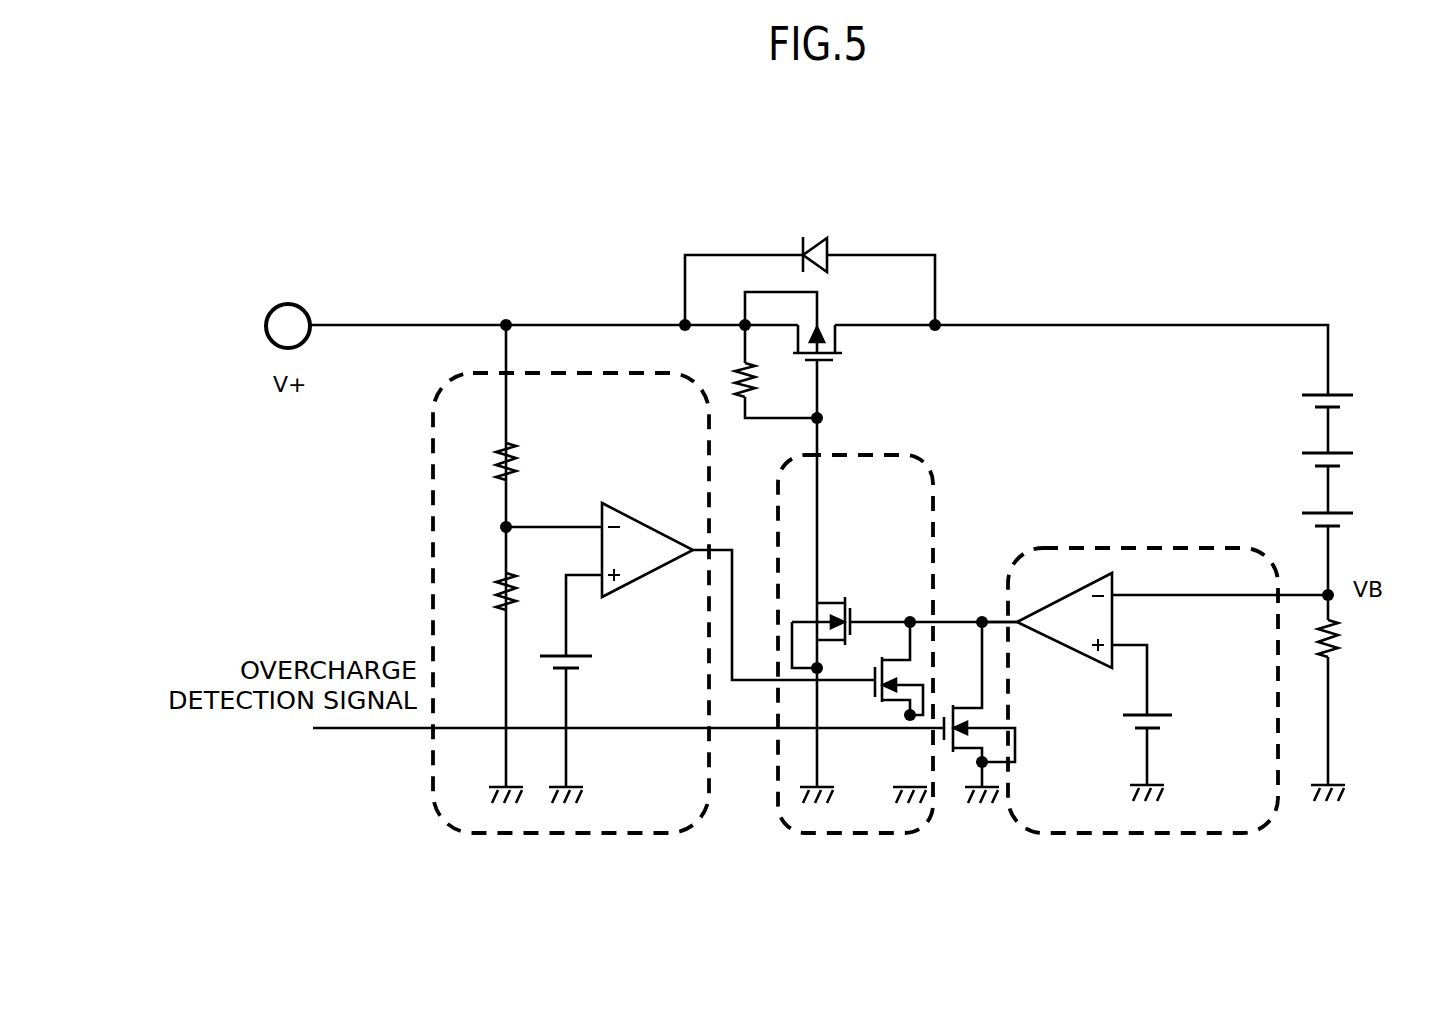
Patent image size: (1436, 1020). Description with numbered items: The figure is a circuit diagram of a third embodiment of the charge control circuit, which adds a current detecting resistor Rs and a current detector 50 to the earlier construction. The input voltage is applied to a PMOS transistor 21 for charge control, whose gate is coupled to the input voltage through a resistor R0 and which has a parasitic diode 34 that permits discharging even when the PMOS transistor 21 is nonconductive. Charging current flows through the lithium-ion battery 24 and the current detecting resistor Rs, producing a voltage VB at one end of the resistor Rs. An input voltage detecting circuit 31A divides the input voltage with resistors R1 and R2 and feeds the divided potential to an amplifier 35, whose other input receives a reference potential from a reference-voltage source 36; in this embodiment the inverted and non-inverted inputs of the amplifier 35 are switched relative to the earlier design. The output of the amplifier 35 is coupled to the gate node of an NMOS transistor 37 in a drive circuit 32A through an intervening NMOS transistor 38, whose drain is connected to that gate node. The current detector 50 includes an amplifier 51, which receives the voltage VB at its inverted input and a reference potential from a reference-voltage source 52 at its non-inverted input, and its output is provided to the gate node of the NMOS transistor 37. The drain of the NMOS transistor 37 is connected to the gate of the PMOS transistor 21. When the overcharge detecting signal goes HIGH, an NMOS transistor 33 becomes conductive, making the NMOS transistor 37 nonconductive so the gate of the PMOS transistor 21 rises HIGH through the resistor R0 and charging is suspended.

The PMOS transistor 21 is at (856, 362).
The lithium-ion battery 24 is at (1372, 452).
The input voltage detecting circuit 31A is at (440, 815).
The drive circuit 32A is at (775, 822).
The NMOS transistor 33 is at (954, 770).
The parasitic diode 34 is at (812, 222).
The amplifier 35 is at (652, 526).
The reference-voltage source 36 is at (598, 672).
The NMOS transistor 37 is at (858, 598).
The NMOS transistor 38 is at (870, 694).
The current detector 50 is at (1040, 835).
The amplifier 51 is at (1053, 647).
The reference-voltage source 52 is at (1180, 705).
The resistor R0 is at (757, 371).
The resistor R1 is at (484, 461).
The resistor R2 is at (484, 591).
The current detecting resistor Rs is at (1350, 638).